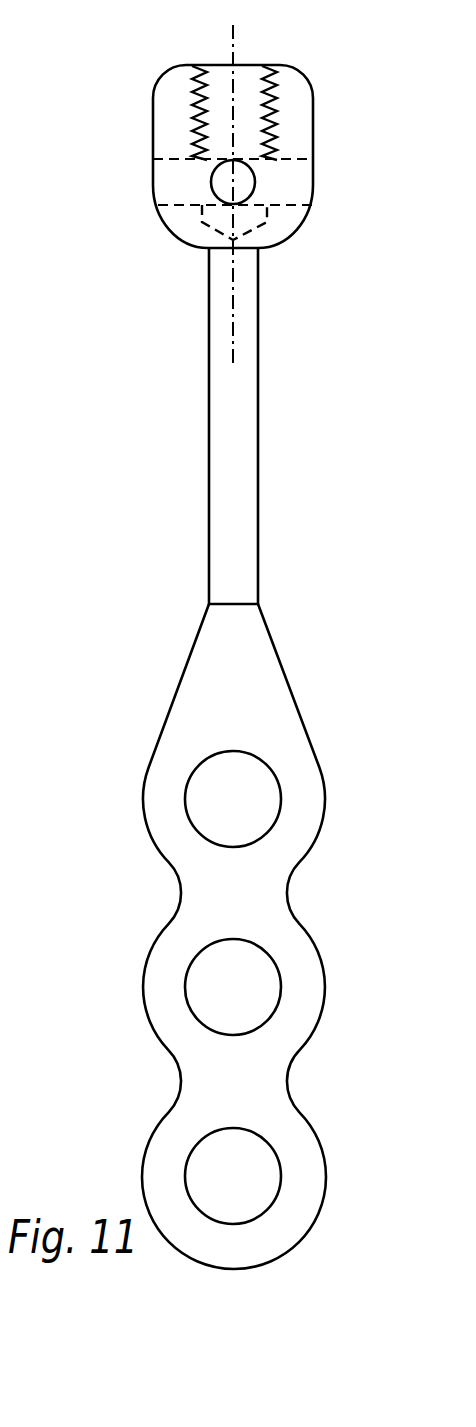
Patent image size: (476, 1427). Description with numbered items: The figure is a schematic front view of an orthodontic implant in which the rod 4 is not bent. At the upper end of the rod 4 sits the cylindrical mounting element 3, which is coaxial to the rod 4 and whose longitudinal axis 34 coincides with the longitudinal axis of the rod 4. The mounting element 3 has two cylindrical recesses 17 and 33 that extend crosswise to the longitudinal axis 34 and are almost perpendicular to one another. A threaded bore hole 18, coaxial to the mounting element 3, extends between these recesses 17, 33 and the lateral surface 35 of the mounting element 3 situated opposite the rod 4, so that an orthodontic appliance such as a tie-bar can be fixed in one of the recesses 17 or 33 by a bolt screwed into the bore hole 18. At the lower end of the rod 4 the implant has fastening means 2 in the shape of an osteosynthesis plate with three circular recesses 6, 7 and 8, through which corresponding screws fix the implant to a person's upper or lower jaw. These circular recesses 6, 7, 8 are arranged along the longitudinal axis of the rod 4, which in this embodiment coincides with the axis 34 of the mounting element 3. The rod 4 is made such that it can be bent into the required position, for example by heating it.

The fastening means 2 is at (225, 905).
The mounting element 3 is at (335, 109).
The rod 4 is at (233, 507).
The circular recess 6 is at (252, 787).
The circular recess 7 is at (210, 983).
The circular recess 8 is at (250, 1170).
The cylindrical recess 17 is at (235, 182).
The threaded bore hole 18 is at (252, 80).
The cylindrical recess 33 is at (297, 183).
The longitudinal axis 34 is at (232, 45).
The lateral surface 35 is at (163, 113).